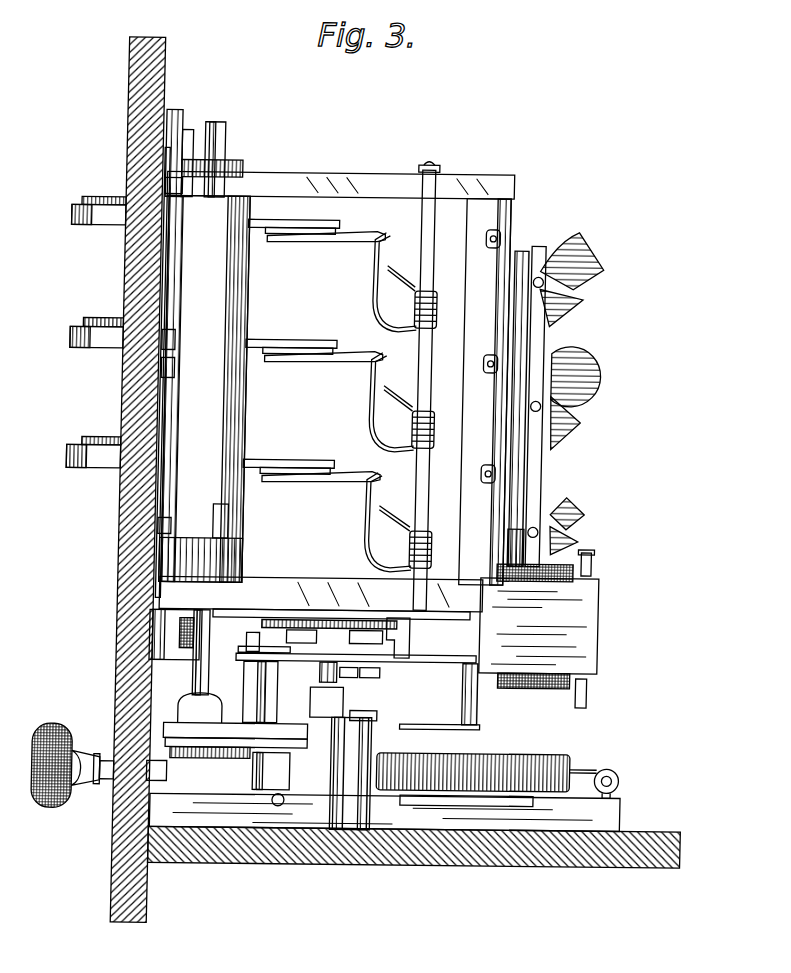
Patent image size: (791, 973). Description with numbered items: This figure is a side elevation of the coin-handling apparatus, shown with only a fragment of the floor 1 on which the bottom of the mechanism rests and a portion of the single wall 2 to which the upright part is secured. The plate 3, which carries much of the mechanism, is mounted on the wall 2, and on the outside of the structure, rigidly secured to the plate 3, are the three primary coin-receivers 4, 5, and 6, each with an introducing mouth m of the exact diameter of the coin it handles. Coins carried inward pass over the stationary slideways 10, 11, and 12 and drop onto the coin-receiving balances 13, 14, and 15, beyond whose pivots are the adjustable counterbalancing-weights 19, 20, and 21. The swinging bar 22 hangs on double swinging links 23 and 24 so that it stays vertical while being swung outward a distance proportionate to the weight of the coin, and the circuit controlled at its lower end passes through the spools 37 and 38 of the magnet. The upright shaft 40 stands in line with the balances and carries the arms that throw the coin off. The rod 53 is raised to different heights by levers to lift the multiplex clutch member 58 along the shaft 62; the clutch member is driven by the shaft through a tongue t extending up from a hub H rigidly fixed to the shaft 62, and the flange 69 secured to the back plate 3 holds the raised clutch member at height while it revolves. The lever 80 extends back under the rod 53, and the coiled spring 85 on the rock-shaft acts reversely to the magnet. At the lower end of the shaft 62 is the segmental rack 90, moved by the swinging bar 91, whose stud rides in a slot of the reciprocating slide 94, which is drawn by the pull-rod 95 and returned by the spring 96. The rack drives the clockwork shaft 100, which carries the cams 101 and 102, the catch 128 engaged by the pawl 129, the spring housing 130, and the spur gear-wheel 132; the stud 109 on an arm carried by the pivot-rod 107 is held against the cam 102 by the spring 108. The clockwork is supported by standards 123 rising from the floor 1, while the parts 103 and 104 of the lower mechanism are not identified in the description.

The floor 1 is at (446, 845).
The wall 2 is at (127, 553).
The plate 3 is at (163, 115).
The primary coin-receiver 4 is at (75, 466).
The primary coin-receiver 5 is at (70, 339).
The primary coin-receiver 6 is at (77, 229).
The mouth m is at (90, 200).
The tongue t is at (229, 521).
The hub H is at (242, 554).
The stationary slideway 10 is at (258, 462).
The stationary slideway 11 is at (282, 341).
The stationary slideway 12 is at (287, 220).
The coin-receiving balance 13 is at (384, 472).
The coin-receiving balance 14 is at (381, 352).
The coin-receiving balance 15 is at (391, 224).
The counterbalancing-weight 19 is at (584, 511).
The counterbalancing-weight 20 is at (596, 374).
The counterbalancing-weight 21 is at (585, 260).
The swinging bar 22 is at (541, 468).
The double swinging link 23 is at (525, 534).
The double swinging link 24 is at (526, 311).
The magnet spool 37 is at (594, 549).
The magnet spool 38 is at (550, 688).
The upright shaft 40 is at (429, 275).
The rod 53 is at (178, 142).
The multiplex clutch member 58 is at (244, 396).
The shaft 62 is at (217, 149).
The flange 69 is at (189, 427).
The lever 80 is at (153, 636).
The coiled spring 85 is at (401, 638).
The segmental rack 90 is at (235, 725).
The swinging bar 91 is at (171, 740).
The reciprocating slide 94 is at (312, 785).
The pull-rod 95 is at (108, 781).
The spring 96 is at (578, 766).
The shaft 100 is at (325, 671).
The cam 101 is at (367, 639).
The cam 102 is at (265, 625).
The block 103 is at (250, 643).
The bar 104 is at (260, 654).
The pivot-rod 107 is at (476, 729).
The spring 108 is at (483, 706).
The stud 109 is at (299, 639).
The standard 123 is at (392, 817).
The catch 128 is at (349, 672).
The pawl 129 is at (377, 673).
The housing 130 is at (328, 701).
The spur gear-wheel 132 is at (364, 718).